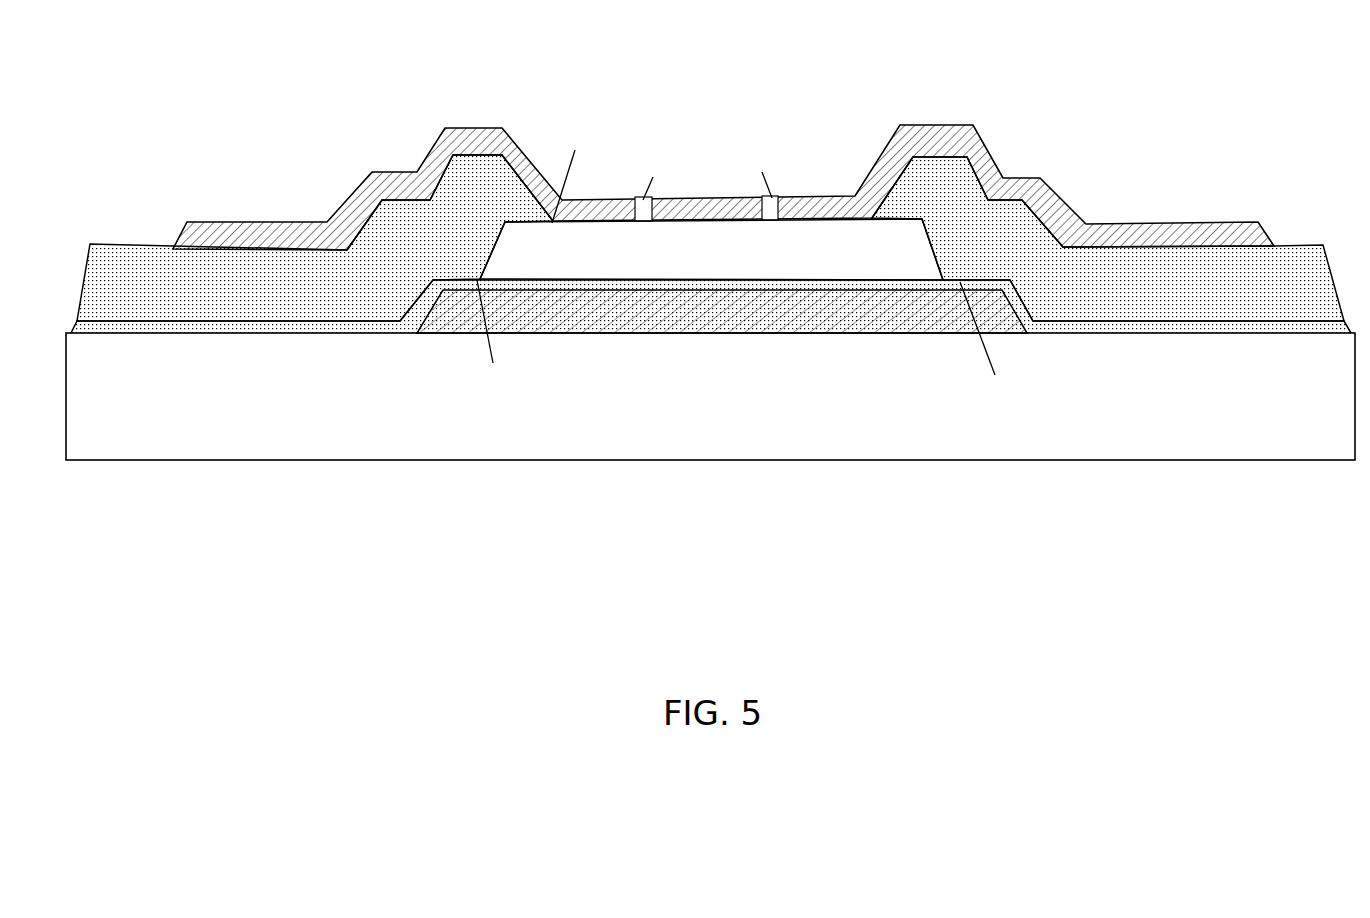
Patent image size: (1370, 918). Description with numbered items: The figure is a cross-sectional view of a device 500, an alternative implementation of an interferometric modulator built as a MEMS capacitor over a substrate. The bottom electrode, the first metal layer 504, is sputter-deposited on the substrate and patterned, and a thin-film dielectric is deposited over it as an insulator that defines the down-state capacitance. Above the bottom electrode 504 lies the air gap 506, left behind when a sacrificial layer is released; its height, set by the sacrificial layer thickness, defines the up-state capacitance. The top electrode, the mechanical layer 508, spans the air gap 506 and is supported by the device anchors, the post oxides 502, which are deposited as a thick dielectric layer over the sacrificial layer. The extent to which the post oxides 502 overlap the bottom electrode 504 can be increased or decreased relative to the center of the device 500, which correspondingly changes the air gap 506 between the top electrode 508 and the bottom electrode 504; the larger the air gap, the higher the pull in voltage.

The device 500 is at (710, 237).
The post oxides 502 is at (710, 238).
The Metal1 M1 504 is at (658, 308).
The air gap 506 is at (710, 311).
The mechanical layer TM 508 is at (838, 203).